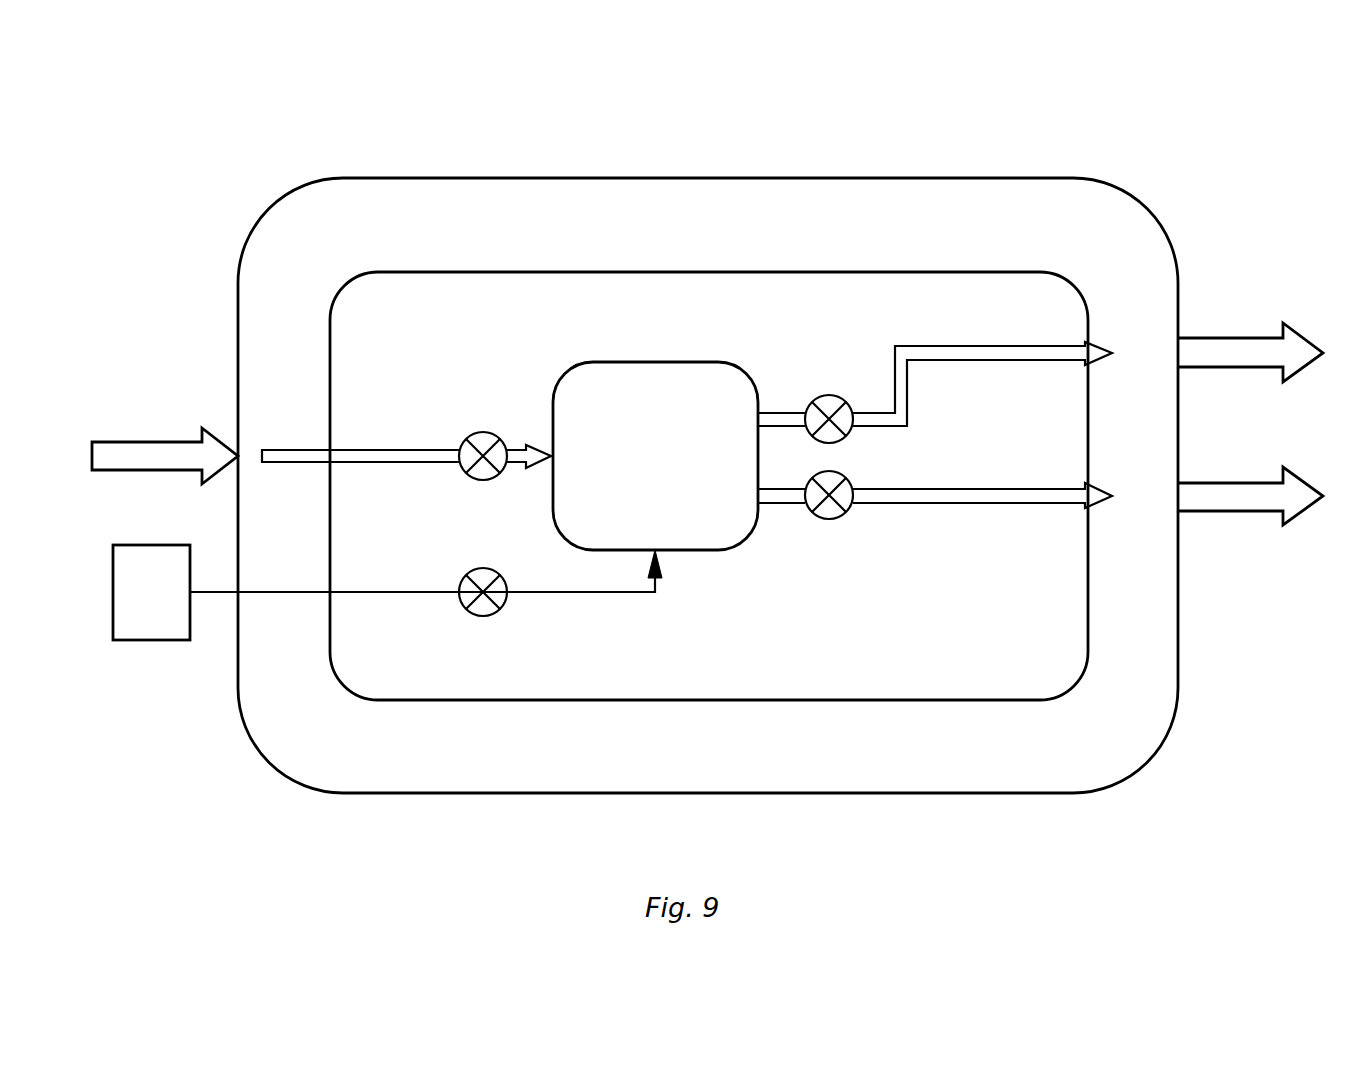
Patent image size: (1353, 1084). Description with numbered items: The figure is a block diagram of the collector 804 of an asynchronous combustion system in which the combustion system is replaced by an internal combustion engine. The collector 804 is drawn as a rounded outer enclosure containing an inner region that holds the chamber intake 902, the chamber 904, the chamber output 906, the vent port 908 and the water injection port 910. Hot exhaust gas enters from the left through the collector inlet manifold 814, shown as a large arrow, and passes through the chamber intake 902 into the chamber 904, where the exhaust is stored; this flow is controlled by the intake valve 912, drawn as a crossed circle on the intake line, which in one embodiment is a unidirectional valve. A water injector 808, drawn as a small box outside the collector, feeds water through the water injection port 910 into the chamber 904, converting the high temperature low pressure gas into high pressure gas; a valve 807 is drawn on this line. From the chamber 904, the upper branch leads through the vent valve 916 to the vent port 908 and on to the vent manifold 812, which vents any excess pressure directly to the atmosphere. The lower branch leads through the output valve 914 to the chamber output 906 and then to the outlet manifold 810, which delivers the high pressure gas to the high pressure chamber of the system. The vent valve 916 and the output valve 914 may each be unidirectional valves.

The collector 804 is at (803, 178).
The water injector 808 is at (146, 643).
The collector inlet manifold 814 is at (143, 441).
The vent manifold 812 is at (1222, 338).
The outlet manifold 810 is at (1235, 512).
The chamber intake 902 is at (374, 450).
The intake valve 912 is at (479, 434).
The chamber 904 is at (649, 363).
The water injection port 910 is at (369, 591).
The control coupler 807 is at (481, 572).
The vent port 908 is at (980, 348).
The vent valve 916 is at (827, 396).
The chamber output 906 is at (972, 490).
The output valve 914 is at (830, 520).